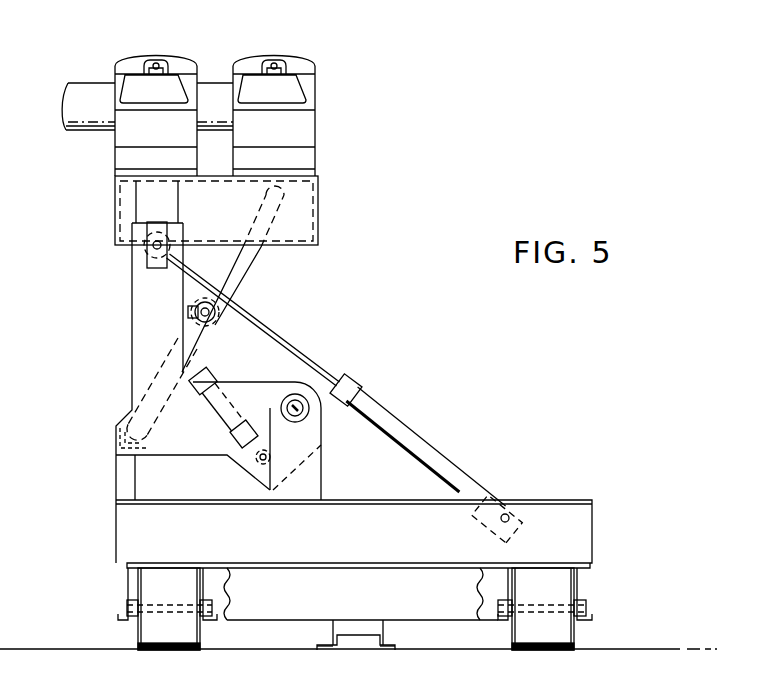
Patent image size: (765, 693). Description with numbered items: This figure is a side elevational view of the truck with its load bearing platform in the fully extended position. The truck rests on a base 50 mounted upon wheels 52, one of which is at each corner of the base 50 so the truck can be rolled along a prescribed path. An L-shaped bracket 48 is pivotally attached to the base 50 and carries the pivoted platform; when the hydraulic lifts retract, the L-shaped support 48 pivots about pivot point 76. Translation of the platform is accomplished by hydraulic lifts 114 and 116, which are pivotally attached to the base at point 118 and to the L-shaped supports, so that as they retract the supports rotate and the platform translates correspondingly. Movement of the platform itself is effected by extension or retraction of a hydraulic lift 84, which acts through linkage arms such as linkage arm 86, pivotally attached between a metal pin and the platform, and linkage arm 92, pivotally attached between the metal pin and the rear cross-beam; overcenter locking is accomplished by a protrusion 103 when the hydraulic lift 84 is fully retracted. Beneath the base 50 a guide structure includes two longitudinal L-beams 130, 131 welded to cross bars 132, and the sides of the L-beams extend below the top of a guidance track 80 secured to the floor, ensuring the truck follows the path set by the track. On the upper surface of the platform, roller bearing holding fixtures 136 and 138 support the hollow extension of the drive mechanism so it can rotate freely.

The L-shaped bracket 48 is at (140, 344).
The base 50 is at (337, 562).
The wheels 52 is at (153, 588).
The pivot point 76 is at (298, 413).
The guidance track 80 is at (372, 608).
The hydraulic lift 84 is at (234, 403).
The linkage arm 86 is at (236, 266).
The linkage arm 92 is at (158, 396).
The protrusion 103 is at (195, 312).
The hydraulic lift 114 is at (312, 330).
The hydraulic lift 116 is at (395, 409).
The pivot point 118 is at (518, 500).
The L-beam 130 is at (323, 623).
The L-beam 131 is at (397, 623).
The cross bars 132 is at (422, 618).
The roller bearing holding fixture 136 is at (167, 27).
The roller bearing holding fixture 138 is at (273, 53).